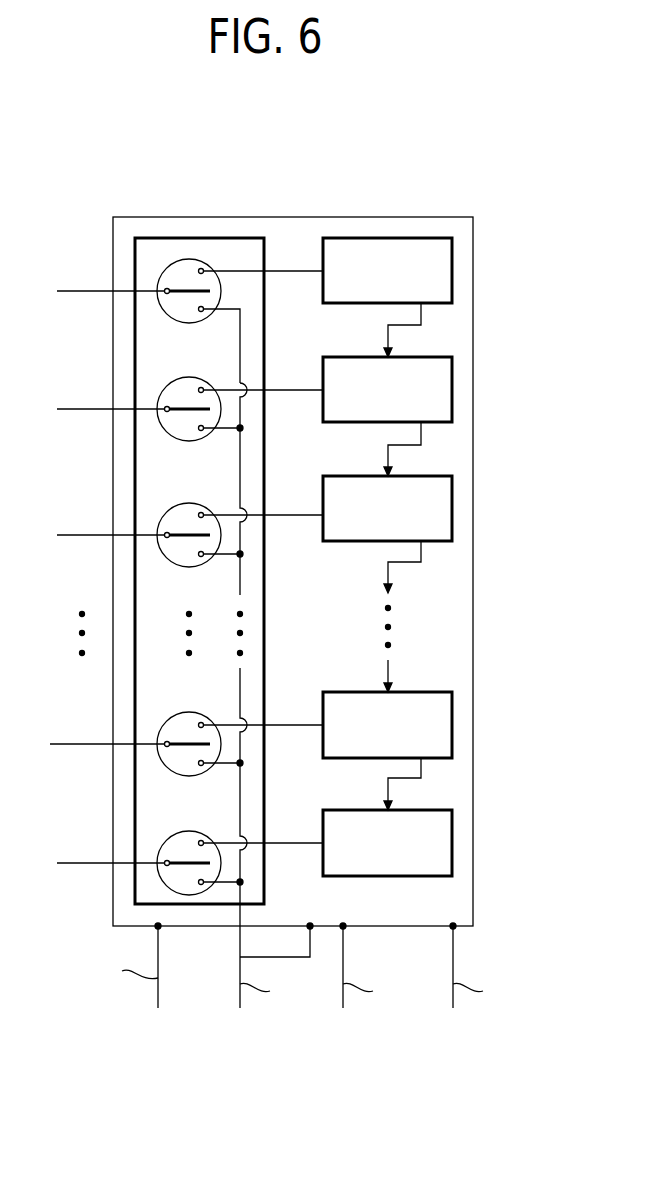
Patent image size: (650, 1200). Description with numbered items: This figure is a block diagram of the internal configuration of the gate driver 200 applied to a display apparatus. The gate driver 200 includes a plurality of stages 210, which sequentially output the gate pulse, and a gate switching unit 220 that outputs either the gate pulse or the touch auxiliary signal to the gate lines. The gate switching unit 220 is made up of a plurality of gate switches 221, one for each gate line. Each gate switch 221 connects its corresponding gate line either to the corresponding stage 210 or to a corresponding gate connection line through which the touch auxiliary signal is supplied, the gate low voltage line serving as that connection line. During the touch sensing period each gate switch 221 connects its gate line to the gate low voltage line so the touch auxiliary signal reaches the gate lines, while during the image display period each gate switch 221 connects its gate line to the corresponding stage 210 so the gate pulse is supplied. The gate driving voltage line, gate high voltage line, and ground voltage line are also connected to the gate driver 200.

The gate driver 200 is at (427, 217).
The stage 210 is at (360, 238).
The gate switching unit 220 is at (218, 238).
The gate switch 221 is at (180, 258).